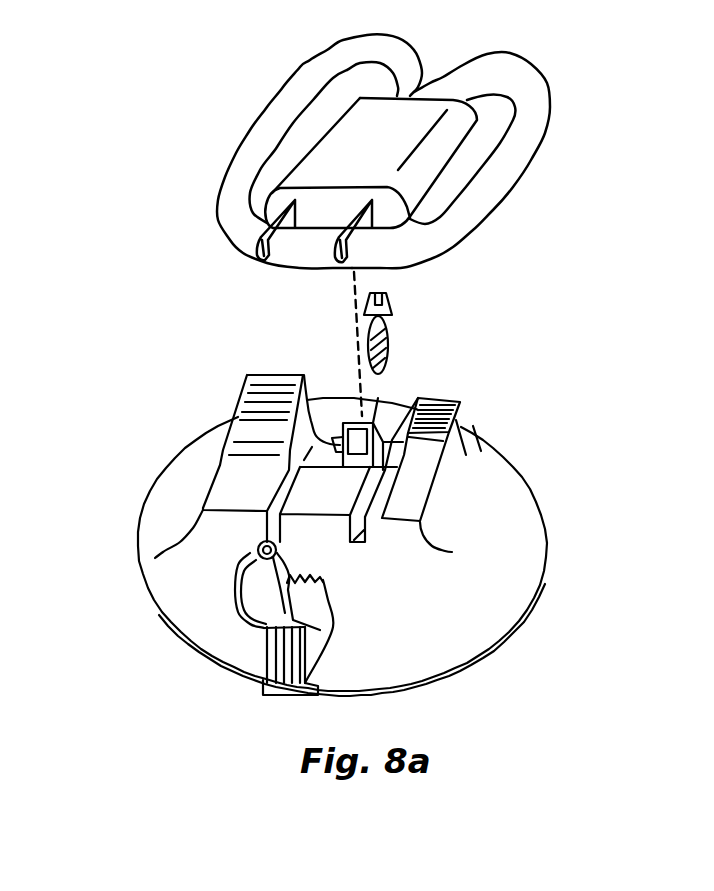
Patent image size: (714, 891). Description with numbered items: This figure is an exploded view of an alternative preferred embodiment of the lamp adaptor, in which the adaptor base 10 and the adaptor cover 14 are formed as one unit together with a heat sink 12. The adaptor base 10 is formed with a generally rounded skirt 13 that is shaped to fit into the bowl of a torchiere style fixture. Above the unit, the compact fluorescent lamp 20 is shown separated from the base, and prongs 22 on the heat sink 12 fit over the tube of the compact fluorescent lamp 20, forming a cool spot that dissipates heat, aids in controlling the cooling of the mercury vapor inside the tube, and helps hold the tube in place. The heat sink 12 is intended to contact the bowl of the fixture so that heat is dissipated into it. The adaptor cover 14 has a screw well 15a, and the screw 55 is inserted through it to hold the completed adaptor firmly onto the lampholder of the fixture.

The adaptor base 10 is at (250, 656).
The heat sink 12 is at (268, 545).
The rounded skirt 13 is at (505, 478).
The adaptor cover 14 is at (465, 418).
The screw well 15a is at (379, 400).
The compact fluorescent lamp 20 is at (297, 76).
The prongs 22 is at (233, 562).
The screw 55 is at (387, 332).